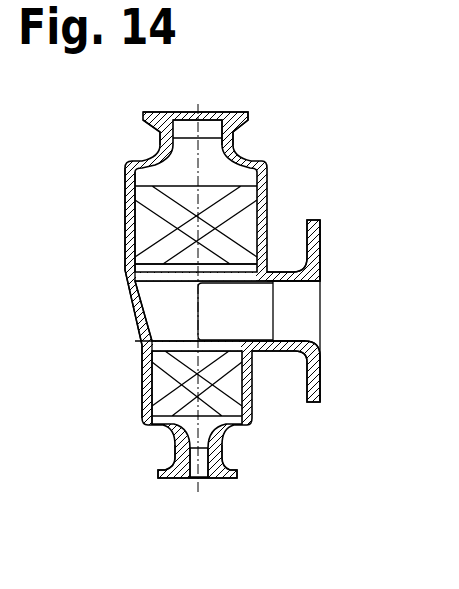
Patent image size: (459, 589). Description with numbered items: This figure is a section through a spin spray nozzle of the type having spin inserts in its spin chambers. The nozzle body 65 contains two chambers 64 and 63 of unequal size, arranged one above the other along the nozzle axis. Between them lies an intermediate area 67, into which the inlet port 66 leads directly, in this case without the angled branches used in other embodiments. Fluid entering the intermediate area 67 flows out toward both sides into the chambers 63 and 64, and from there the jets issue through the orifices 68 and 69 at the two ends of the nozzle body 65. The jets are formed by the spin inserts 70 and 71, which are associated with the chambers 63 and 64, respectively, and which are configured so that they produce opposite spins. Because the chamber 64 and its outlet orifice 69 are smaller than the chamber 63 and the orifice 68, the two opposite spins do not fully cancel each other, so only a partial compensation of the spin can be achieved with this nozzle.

The chamber 63 is at (148, 236).
The chamber 64 is at (158, 384).
The nozzle body 65 is at (132, 310).
The inlet port 66 is at (287, 305).
The intermediate area 67 is at (170, 318).
The orifice 68 is at (156, 126).
The outlet orifice 69 is at (203, 468).
The spin insert 70 is at (220, 220).
The spin insert 71 is at (256, 397).